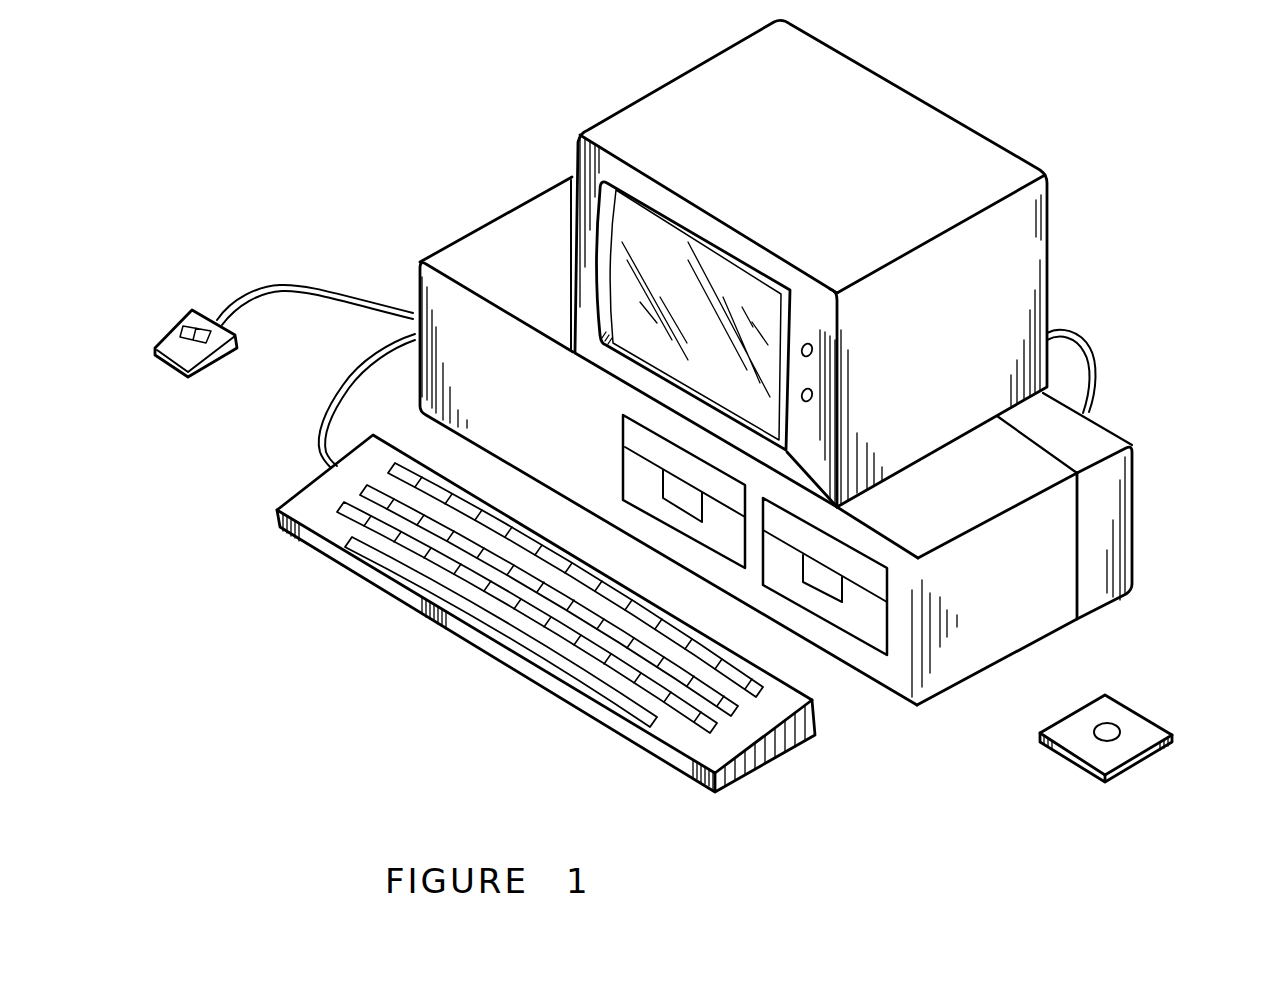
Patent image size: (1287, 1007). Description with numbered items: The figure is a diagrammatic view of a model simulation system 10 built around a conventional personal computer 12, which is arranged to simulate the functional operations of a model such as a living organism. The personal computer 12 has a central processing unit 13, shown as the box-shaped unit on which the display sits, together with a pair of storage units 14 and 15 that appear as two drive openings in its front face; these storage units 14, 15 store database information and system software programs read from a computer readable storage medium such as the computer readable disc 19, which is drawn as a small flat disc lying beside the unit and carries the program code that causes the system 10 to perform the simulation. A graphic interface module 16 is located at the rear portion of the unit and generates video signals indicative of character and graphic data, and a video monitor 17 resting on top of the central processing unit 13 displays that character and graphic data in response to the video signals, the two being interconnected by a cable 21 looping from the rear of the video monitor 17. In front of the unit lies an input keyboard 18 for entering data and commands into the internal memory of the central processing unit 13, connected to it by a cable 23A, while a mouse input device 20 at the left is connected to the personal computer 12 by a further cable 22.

The model simulation system 10 is at (304, 656).
The personal computer 12 is at (425, 225).
The central processing unit 13 is at (979, 650).
The storage unit 14 is at (720, 540).
The storage unit 15 is at (865, 627).
The graphic interface module 16 is at (1095, 578).
The video monitor 17 is at (1050, 218).
The input keyboard 18 is at (741, 767).
The computer readable disc 19 is at (1133, 733).
The mouse input device 20 is at (193, 310).
The cable 21 is at (1093, 348).
The cable 22 is at (323, 287).
The cable 23A is at (313, 438).